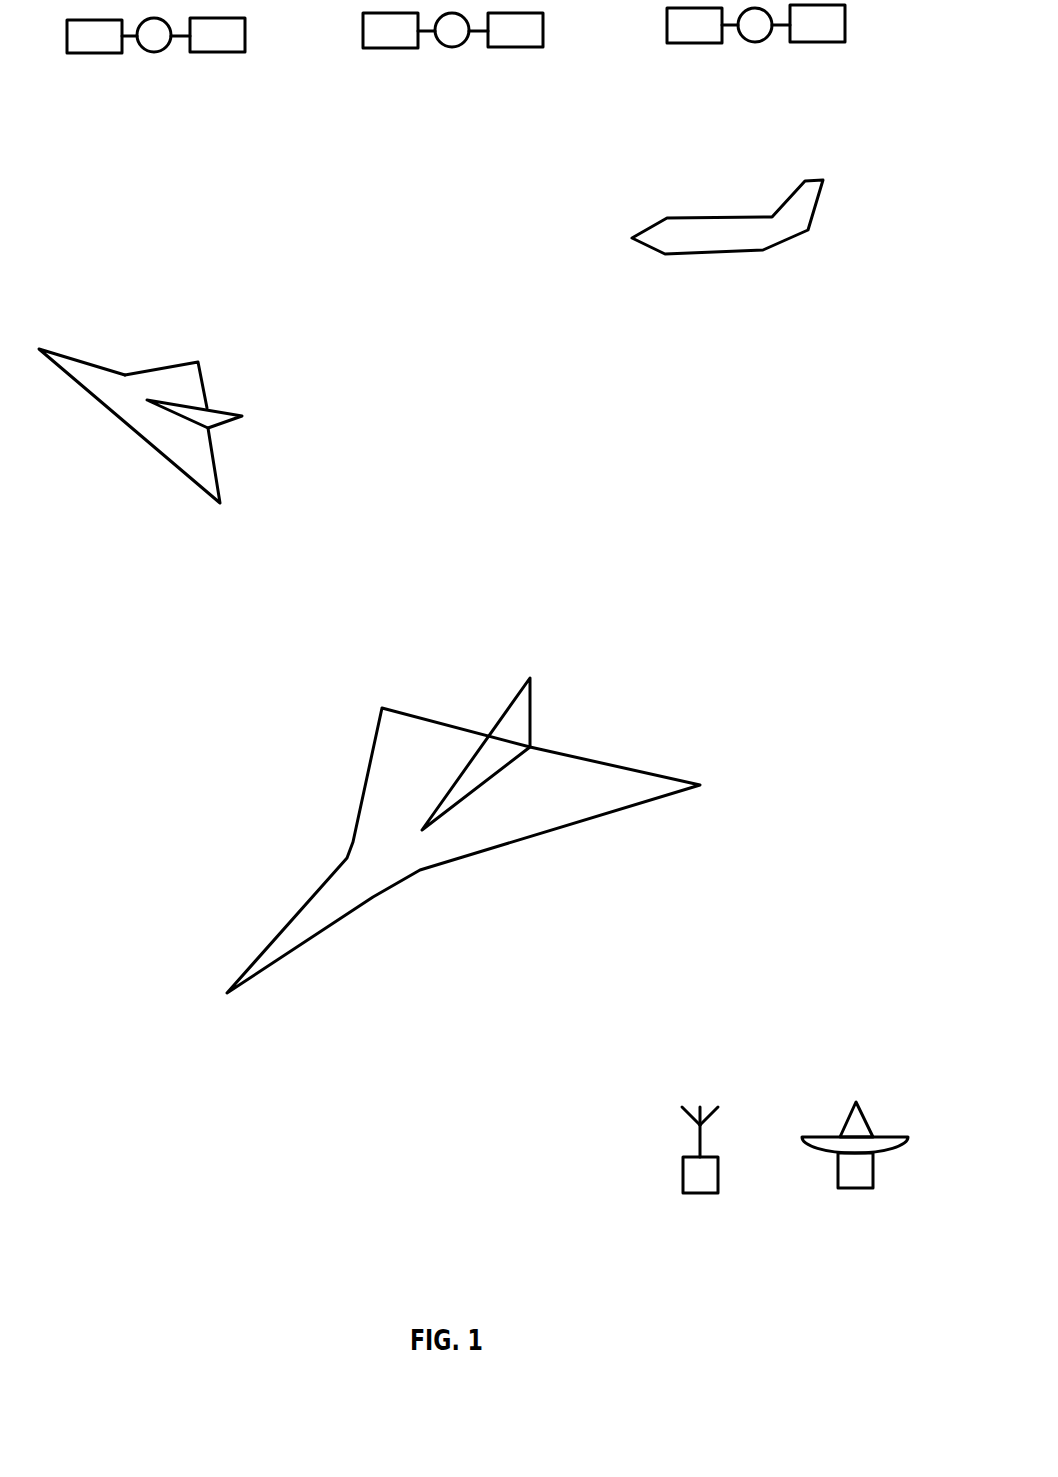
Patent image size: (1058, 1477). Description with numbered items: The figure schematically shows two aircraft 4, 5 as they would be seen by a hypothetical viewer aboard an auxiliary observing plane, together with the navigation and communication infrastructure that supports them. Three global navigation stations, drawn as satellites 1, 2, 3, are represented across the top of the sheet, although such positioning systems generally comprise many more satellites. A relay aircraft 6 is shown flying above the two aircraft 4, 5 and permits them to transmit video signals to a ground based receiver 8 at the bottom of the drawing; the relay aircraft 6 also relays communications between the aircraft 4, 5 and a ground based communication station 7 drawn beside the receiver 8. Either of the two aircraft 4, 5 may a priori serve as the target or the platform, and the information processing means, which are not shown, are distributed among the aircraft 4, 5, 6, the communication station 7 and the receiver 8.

The global navigation satellite 1 is at (156, 57).
The global navigation satellite 2 is at (453, 54).
The global navigation satellite 3 is at (756, 46).
The aircraft 4 is at (145, 426).
The aircraft 5 is at (463, 835).
The relay aircraft 6 is at (737, 217).
The ground based communication station 7 is at (700, 1173).
The ground based receiver 8 is at (855, 1170).